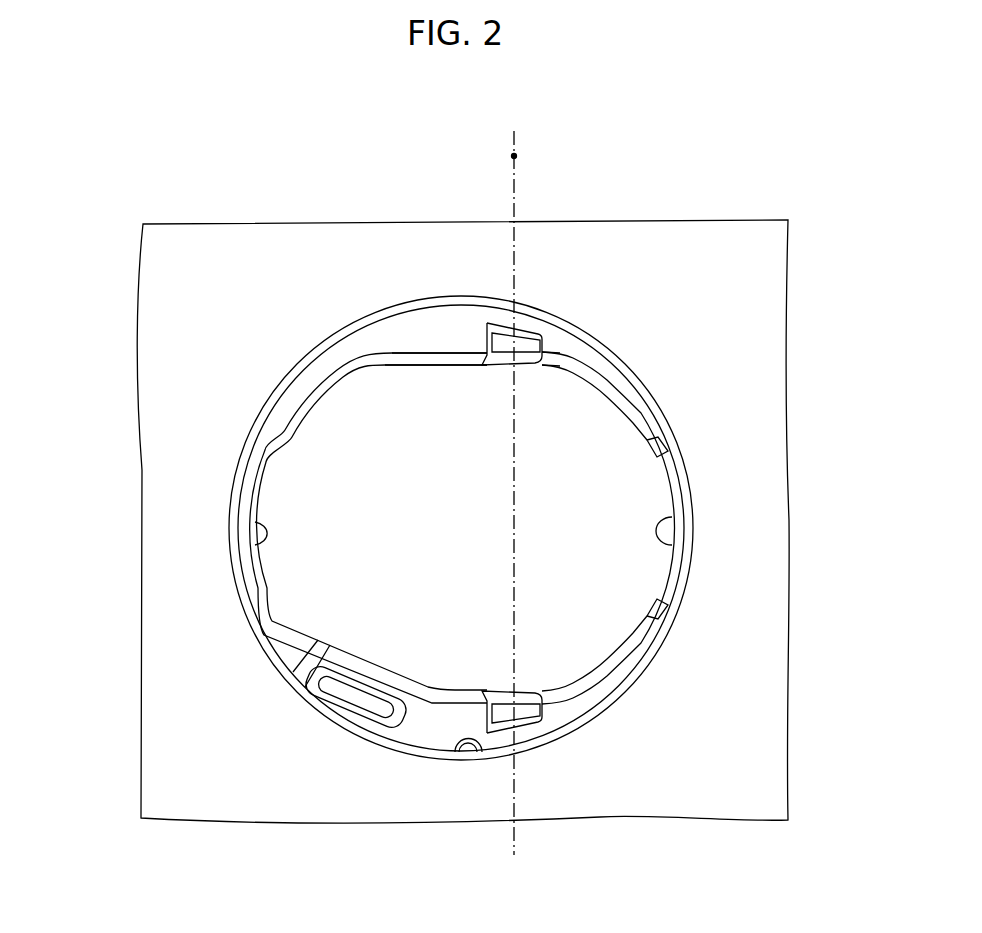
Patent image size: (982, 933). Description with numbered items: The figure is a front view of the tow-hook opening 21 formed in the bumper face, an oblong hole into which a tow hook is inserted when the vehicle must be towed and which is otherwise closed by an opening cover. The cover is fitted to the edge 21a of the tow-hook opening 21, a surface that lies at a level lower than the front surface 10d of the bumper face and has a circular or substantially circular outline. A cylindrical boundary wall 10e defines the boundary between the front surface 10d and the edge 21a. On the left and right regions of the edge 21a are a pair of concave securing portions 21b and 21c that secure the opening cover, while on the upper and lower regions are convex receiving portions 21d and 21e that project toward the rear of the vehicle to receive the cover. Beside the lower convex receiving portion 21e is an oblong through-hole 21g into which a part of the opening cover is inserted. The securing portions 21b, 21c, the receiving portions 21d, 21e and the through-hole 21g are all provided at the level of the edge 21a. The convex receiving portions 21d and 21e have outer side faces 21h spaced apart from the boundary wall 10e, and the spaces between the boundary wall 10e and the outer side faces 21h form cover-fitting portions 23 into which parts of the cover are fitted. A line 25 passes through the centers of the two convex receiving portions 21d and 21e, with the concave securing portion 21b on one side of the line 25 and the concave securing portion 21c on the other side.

The front surface 10d is at (737, 298).
The cylindrical boundary wall 10e is at (378, 314).
The tow-hook opening 21 is at (401, 380).
The edge 21a is at (428, 331).
The concave securing portion 21b is at (672, 517).
The concave securing portion 21c is at (255, 522).
The convex receiving portion 21d is at (503, 342).
The convex receiving portion 21e is at (505, 717).
The oblong through-hole 21g is at (366, 718).
The outer side faces 21h is at (538, 332).
The cover-fitting portions 23 is at (522, 324).
The line 25 is at (516, 156).